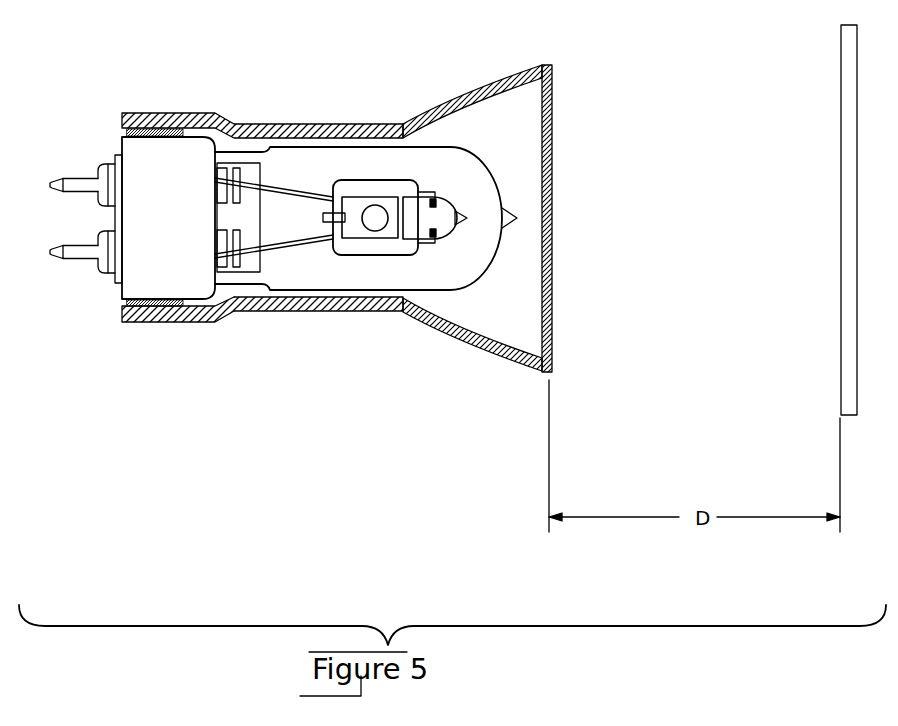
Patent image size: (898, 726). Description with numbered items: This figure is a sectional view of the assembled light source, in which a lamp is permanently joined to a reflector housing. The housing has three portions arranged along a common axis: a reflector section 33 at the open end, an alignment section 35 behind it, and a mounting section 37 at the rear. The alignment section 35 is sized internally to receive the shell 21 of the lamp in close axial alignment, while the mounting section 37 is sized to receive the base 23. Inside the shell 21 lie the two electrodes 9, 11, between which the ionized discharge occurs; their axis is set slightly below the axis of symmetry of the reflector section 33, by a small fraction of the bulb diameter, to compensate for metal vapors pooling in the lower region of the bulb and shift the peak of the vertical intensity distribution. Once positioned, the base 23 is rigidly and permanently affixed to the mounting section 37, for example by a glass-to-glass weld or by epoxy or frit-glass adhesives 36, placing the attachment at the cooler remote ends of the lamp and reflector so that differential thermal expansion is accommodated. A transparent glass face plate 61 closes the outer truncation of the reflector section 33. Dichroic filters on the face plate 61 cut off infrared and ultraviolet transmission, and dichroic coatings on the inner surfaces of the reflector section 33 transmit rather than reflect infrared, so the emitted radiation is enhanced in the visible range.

The electrode 9 is at (437, 190).
The electrode 11 is at (437, 246).
The shell 21 is at (375, 284).
The base 23 is at (118, 287).
The reflector section 33 is at (443, 344).
The alignment section 35 is at (288, 311).
The adhesives 36 is at (127, 132).
The mounting section 37 is at (213, 322).
The face plate 61 is at (543, 300).